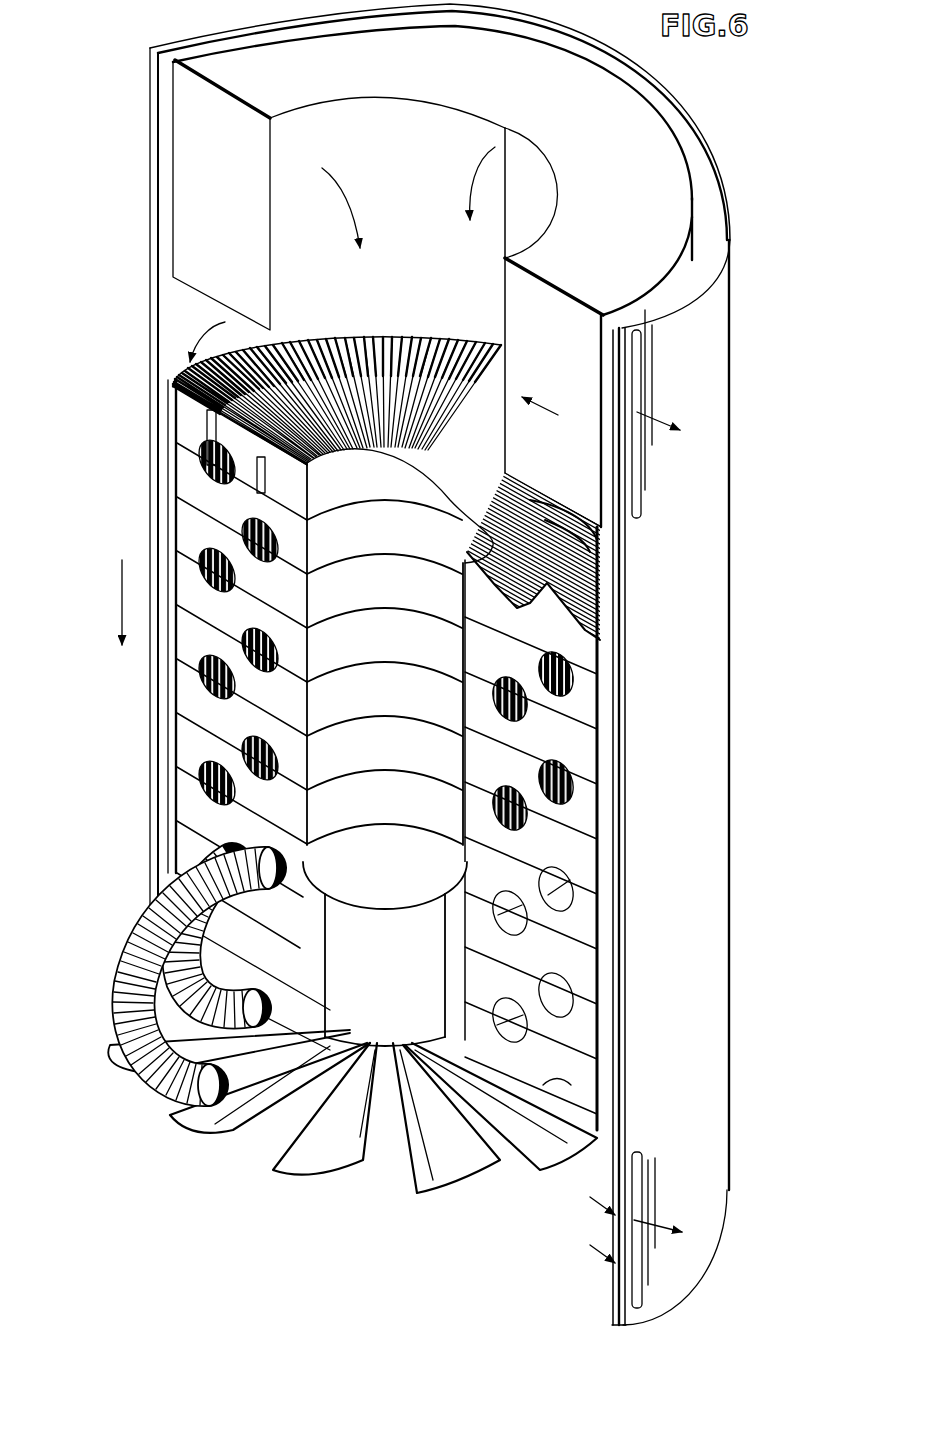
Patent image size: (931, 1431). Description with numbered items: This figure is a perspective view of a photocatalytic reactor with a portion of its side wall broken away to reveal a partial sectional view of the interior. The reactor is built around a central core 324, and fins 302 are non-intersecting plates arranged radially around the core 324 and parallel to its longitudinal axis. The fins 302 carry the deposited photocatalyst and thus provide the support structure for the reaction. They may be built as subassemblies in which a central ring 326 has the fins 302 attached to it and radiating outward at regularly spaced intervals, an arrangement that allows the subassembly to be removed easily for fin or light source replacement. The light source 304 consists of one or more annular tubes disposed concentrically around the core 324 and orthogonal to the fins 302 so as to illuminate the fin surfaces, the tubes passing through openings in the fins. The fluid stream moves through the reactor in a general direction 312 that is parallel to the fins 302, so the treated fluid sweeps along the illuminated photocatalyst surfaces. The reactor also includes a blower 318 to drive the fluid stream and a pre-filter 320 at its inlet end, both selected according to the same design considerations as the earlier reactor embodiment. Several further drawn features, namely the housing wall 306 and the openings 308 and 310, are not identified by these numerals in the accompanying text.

The plate stack with apertures 302 is at (583, 663).
The flexible corrugated hoses 304 is at (136, 951).
The cylindrical housing 306 is at (731, 273).
The upper vent slot 308 is at (635, 381).
The lower vent slot 310 is at (637, 1196).
The air flow path 312 is at (123, 602).
The fan blades 318 is at (292, 1170).
The top annular block 320 is at (186, 208).
The central shaft 324 is at (386, 806).
The finned core cylinder 326 is at (433, 491).